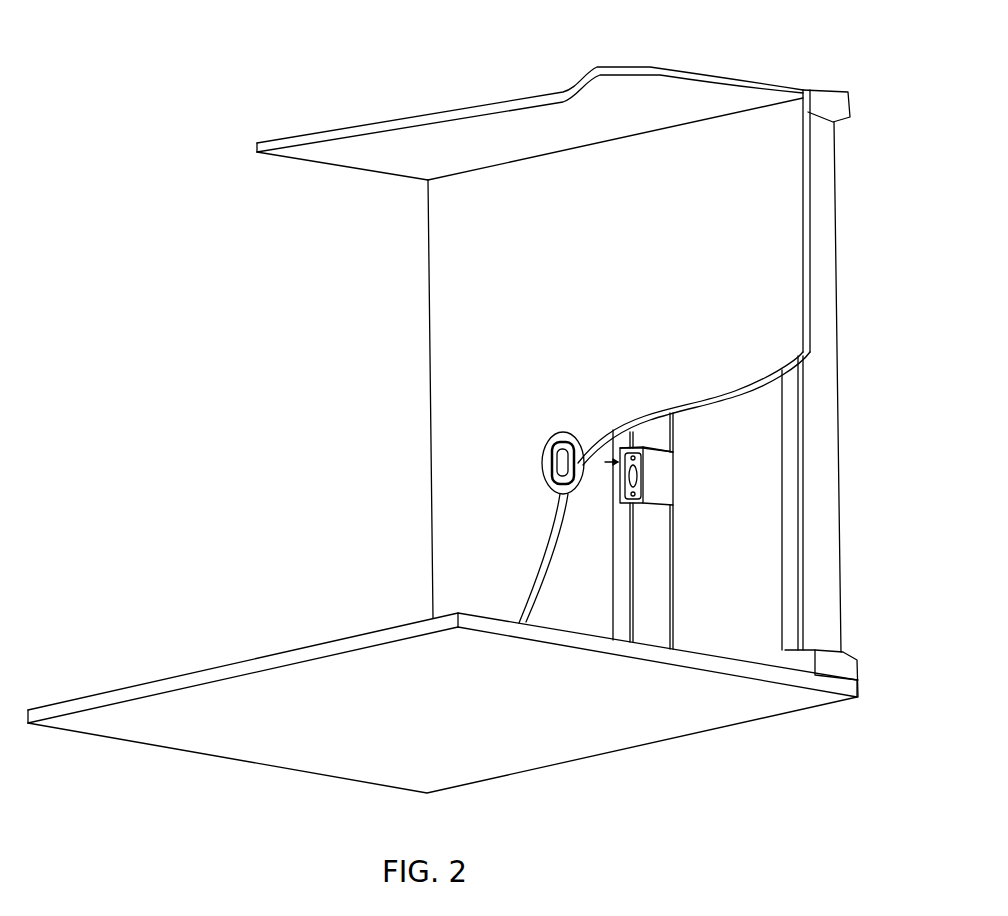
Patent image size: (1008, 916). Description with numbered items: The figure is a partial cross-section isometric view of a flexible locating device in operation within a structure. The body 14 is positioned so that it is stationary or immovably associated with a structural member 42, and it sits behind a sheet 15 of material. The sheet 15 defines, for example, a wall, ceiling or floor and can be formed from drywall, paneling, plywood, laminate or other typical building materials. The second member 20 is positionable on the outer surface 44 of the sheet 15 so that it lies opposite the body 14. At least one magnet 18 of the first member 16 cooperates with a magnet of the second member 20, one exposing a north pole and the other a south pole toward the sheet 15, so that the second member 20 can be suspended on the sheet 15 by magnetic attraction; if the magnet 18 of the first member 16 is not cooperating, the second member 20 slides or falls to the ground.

The body 14 is at (678, 490).
The sheet 15 is at (727, 343).
The first member 16 is at (642, 512).
The magnet 18 is at (648, 460).
The second member 20 is at (563, 424).
The structural member 42 is at (655, 618).
The outer surface 44 is at (617, 108).